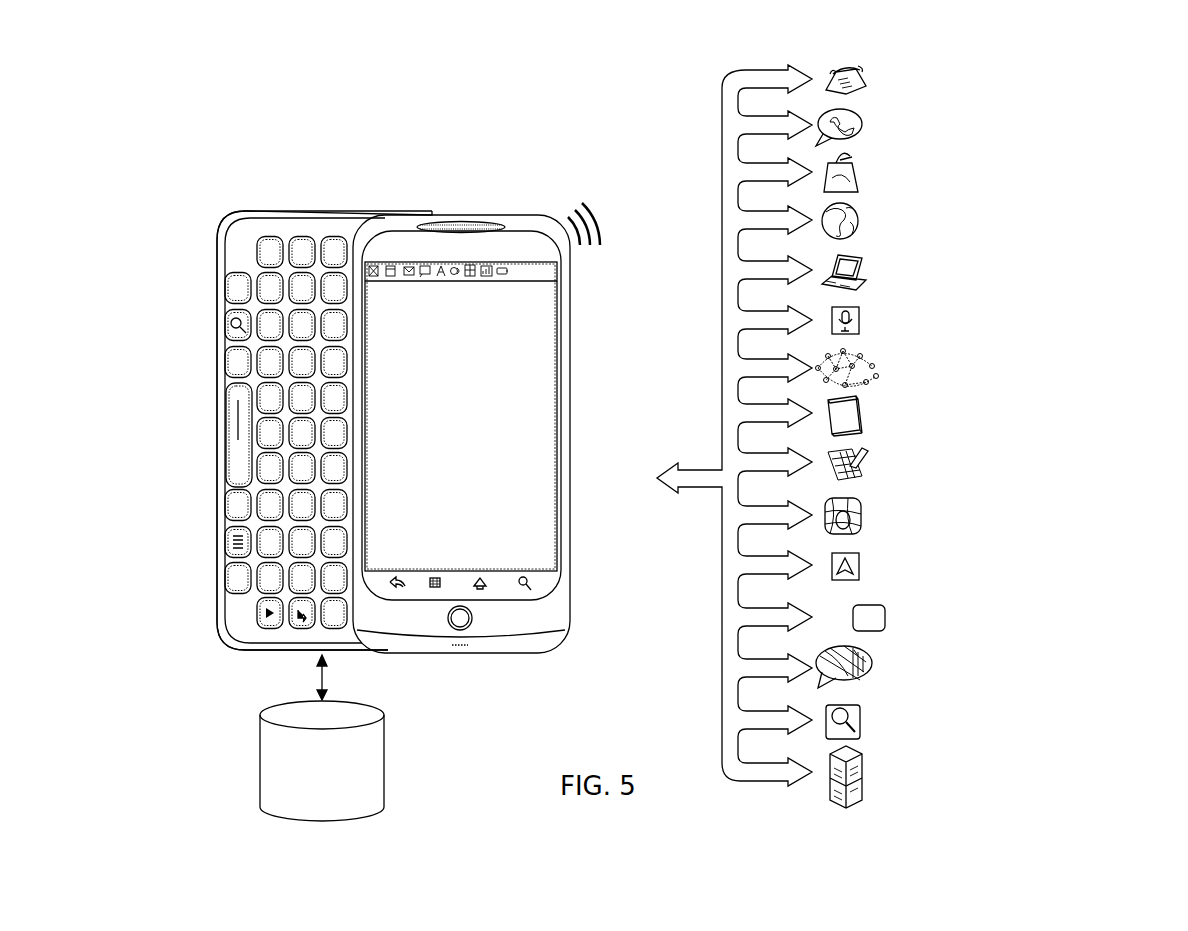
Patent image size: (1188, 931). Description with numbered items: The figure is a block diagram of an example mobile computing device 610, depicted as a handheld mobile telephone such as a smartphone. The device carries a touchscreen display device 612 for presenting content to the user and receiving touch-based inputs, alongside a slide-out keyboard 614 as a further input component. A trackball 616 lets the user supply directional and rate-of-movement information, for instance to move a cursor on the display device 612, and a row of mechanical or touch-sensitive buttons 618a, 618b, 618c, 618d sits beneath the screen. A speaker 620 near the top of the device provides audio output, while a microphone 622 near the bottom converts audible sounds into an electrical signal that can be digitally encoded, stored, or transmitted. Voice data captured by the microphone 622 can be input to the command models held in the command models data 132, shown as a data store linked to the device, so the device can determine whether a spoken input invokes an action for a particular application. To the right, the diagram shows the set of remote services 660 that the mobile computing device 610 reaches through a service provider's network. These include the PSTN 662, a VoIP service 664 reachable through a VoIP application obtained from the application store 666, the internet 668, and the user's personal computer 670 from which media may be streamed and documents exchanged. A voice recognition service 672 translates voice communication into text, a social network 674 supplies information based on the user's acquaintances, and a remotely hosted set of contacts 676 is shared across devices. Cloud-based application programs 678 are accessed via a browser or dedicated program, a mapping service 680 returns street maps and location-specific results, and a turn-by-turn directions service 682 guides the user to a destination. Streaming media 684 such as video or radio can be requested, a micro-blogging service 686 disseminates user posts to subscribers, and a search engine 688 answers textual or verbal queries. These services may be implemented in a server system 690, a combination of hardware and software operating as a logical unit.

The mobile computing device 610 is at (508, 163).
The touchscreen display device 612 is at (570, 426).
The keyboard 614 is at (322, 212).
The trackball 616 is at (473, 620).
The button 618a is at (397, 577).
The button 618b is at (435, 577).
The button 618c is at (480, 577).
The button 618d is at (523, 577).
The speaker 620 is at (465, 222).
The microphone 622 is at (460, 648).
The command models data 132 is at (322, 738).
The services 660 is at (1117, 60).
The PSTN 662 is at (862, 84).
The VoIP service 664 is at (860, 124).
The application store 666 is at (858, 168).
The internet 668 is at (858, 226).
The personal computer 670 is at (866, 268).
The voice recognition service 672 is at (860, 314).
The social network 674 is at (876, 362).
The contacts 676 is at (862, 418).
The cloud-based application programs 678 is at (862, 468).
The mapping service 680 is at (862, 506).
The turn-by-turn directions service 682 is at (860, 566).
The streaming media 684 is at (888, 614).
The micro-blogging service 686 is at (872, 666).
The search engine 688 is at (862, 716).
The server system 690 is at (862, 766).